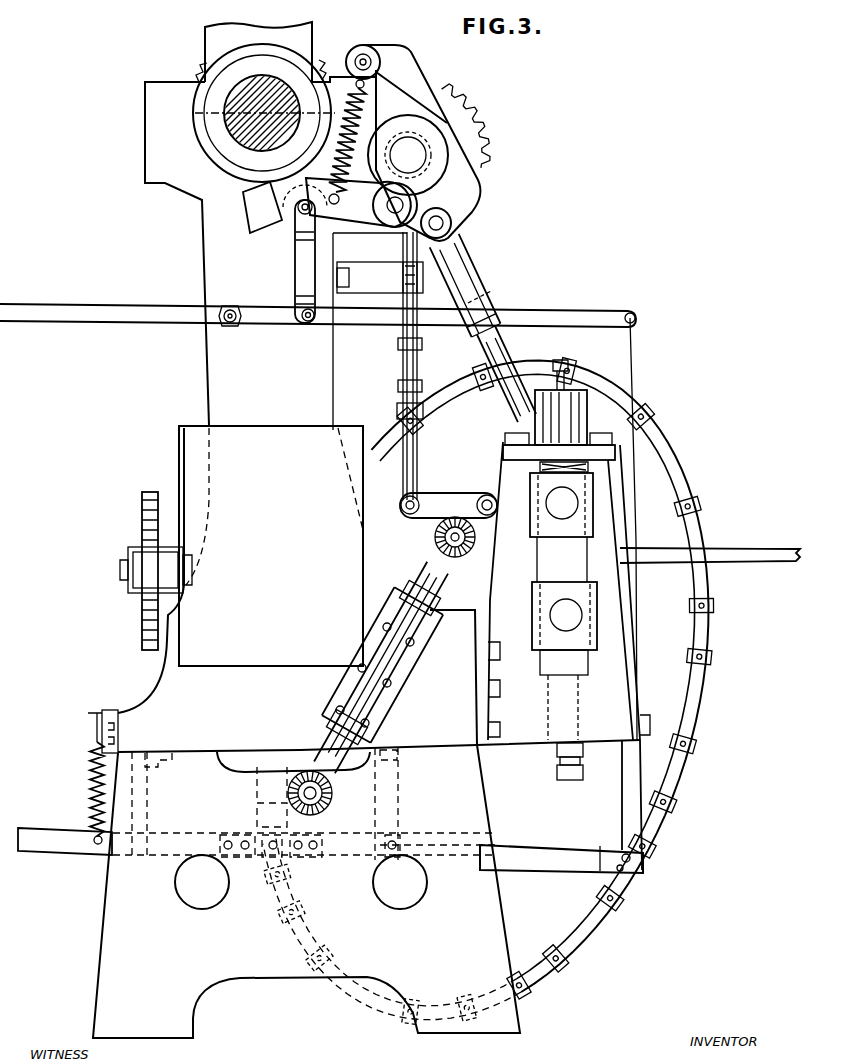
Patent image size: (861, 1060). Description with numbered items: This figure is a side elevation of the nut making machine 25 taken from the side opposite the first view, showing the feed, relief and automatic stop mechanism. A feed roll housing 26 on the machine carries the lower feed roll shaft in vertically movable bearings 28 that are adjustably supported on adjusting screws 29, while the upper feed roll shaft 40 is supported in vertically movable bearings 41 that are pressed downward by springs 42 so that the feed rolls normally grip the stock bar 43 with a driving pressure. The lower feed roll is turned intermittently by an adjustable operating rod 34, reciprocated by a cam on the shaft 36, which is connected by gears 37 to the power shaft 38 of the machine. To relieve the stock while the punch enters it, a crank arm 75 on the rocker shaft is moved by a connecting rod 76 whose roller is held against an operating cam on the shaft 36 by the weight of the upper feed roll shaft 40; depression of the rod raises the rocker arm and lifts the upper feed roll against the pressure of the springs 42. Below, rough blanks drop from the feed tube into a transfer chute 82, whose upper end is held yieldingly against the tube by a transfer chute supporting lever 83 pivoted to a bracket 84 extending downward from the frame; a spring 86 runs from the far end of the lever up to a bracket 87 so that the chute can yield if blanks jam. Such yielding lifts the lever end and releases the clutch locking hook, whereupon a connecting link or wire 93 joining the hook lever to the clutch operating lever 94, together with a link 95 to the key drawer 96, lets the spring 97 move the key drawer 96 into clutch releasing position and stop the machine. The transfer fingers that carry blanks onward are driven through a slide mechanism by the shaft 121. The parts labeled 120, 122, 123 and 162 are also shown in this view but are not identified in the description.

The machine 25 is at (143, 683).
The feed roll housing 26 is at (623, 656).
The vertically movable bearing 28 is at (596, 598).
The adjusting screw 29 is at (587, 762).
The adjustable operating rod 34 is at (510, 358).
The shaft 36 is at (410, 155).
The gears 37 is at (490, 127).
The power shaft 38 is at (243, 127).
The upper feed roll shaft 40 is at (570, 505).
The vertically movable bearing 41 is at (548, 530).
The spring 42 is at (588, 467).
The stock bar 43 is at (752, 548).
The crank arm 75 is at (447, 496).
The connecting rod 76 is at (398, 340).
The transfer chute 82 is at (571, 950).
The transfer chute supporting lever 83 is at (50, 855).
The bracket 84 is at (403, 787).
The spring 86 is at (90, 780).
The bracket 87 is at (102, 710).
The connecting link or wire 93 is at (634, 368).
The clutch operating lever 94 is at (563, 307).
The link 95 is at (303, 267).
The key drawer 96 is at (257, 213).
The spring 97 is at (360, 137).
The bevel gear 120 is at (467, 560).
The shaft 121 is at (398, 664).
The bevel gear 122 is at (327, 790).
The shaft 123 is at (310, 862).
The gear 162 is at (147, 492).